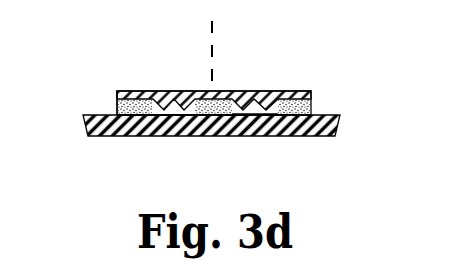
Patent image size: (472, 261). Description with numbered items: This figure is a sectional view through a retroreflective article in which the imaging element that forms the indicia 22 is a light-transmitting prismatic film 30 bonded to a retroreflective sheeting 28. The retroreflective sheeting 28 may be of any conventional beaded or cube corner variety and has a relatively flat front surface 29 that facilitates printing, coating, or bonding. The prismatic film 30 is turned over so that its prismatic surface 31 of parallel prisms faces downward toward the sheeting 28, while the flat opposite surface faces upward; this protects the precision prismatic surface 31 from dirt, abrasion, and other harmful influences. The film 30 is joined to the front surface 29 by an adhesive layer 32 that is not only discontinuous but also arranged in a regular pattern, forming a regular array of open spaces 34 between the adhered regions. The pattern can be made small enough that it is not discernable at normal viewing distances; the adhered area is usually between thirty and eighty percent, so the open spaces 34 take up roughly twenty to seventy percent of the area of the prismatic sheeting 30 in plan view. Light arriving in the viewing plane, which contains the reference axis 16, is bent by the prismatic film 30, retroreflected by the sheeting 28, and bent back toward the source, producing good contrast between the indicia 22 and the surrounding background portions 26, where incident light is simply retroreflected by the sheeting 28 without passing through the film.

The reference axis 16 is at (213, 53).
The indicia 22 is at (270, 75).
The background portions 26 is at (115, 113).
The retroreflective sheeting 28 is at (118, 137).
The front surface 29 is at (313, 113).
The prismatic sheeting 30 is at (313, 93).
The prismatic surface 31 is at (253, 113).
The adhesive layer 32 is at (290, 106).
The open spaces 34 is at (235, 111).